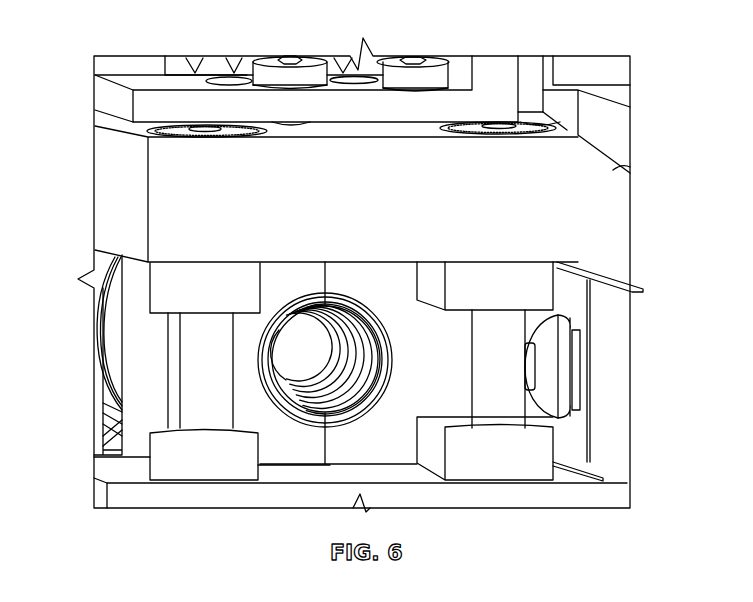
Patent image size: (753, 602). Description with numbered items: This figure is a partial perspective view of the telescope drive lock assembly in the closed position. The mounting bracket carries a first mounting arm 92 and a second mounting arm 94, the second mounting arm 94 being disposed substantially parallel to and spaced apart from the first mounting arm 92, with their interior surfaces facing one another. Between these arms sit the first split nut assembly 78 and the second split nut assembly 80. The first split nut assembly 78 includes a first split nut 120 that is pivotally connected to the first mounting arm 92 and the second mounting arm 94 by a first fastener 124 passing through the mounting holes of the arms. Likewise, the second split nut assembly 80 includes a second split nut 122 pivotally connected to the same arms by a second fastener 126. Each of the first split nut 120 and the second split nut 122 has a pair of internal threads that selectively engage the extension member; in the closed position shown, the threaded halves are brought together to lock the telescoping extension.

The first mounting arm 92 is at (577, 168).
The second split nut assembly 80 is at (295, 283).
The first split nut assembly 78 is at (387, 279).
The second fastener 126 is at (190, 382).
The first fastener 124 is at (500, 393).
The second mounting arm 94 is at (575, 481).
The first split nut 120 is at (362, 445).
The second split nut 122 is at (292, 445).